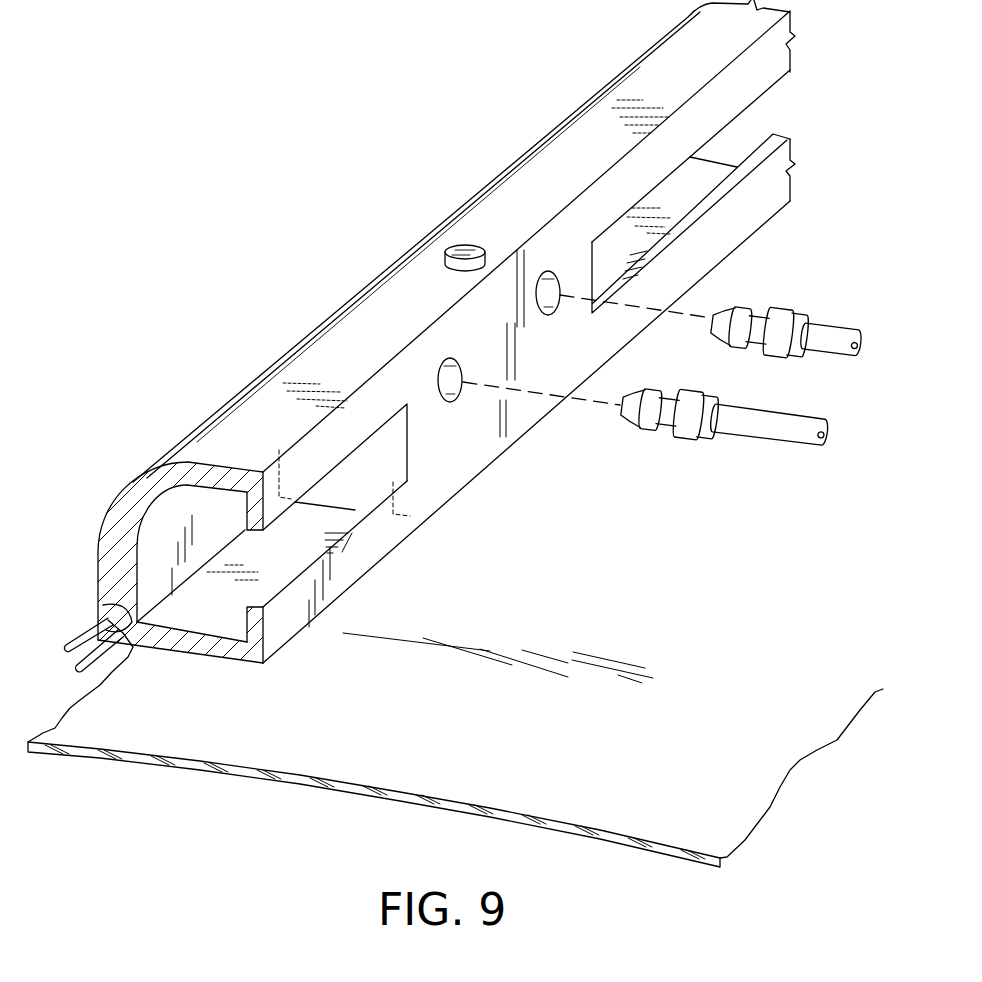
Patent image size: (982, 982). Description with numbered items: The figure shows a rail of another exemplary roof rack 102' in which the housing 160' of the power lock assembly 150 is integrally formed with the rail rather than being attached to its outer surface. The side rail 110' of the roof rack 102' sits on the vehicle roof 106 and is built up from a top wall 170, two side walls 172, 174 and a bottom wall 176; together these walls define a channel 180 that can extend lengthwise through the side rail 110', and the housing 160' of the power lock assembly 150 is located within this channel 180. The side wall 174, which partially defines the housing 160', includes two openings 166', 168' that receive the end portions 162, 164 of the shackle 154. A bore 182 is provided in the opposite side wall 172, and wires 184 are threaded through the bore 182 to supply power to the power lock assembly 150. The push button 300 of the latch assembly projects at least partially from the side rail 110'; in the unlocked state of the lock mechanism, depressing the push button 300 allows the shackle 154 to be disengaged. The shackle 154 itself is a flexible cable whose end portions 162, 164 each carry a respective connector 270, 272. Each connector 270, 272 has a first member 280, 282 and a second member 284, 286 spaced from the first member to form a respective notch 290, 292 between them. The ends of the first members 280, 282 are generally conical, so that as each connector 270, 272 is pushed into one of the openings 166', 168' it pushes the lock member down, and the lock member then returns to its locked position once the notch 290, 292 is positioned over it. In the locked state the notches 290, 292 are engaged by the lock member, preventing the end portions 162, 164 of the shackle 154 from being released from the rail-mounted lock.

The roof rack 102' is at (448, 335).
The side rail 110' is at (464, 331).
The top wall 170 is at (262, 408).
The channel 180 is at (168, 512).
The side wall 172 is at (110, 573).
The bore 182 is at (110, 600).
The wires 184 is at (79, 632).
The bottom wall 176 is at (195, 647).
The side wall 174 is at (258, 613).
The power lock assembly 150 is at (356, 474).
The housing 160' is at (387, 482).
The opening 166' is at (529, 432).
The opening 168' is at (624, 320).
The push button 300 is at (455, 236).
The vehicle roof 106 is at (313, 748).
The end portion 164 is at (793, 297).
The first member 282 is at (738, 318).
The notch 292 is at (770, 312).
The second member 286 is at (785, 345).
The connector 272 is at (822, 308).
The end portion 162 is at (684, 458).
The first member 280 is at (643, 428).
The notch 290 is at (662, 432).
The second member 284 is at (690, 398).
The connector 270 is at (711, 460).
The shackle 154 is at (782, 464).